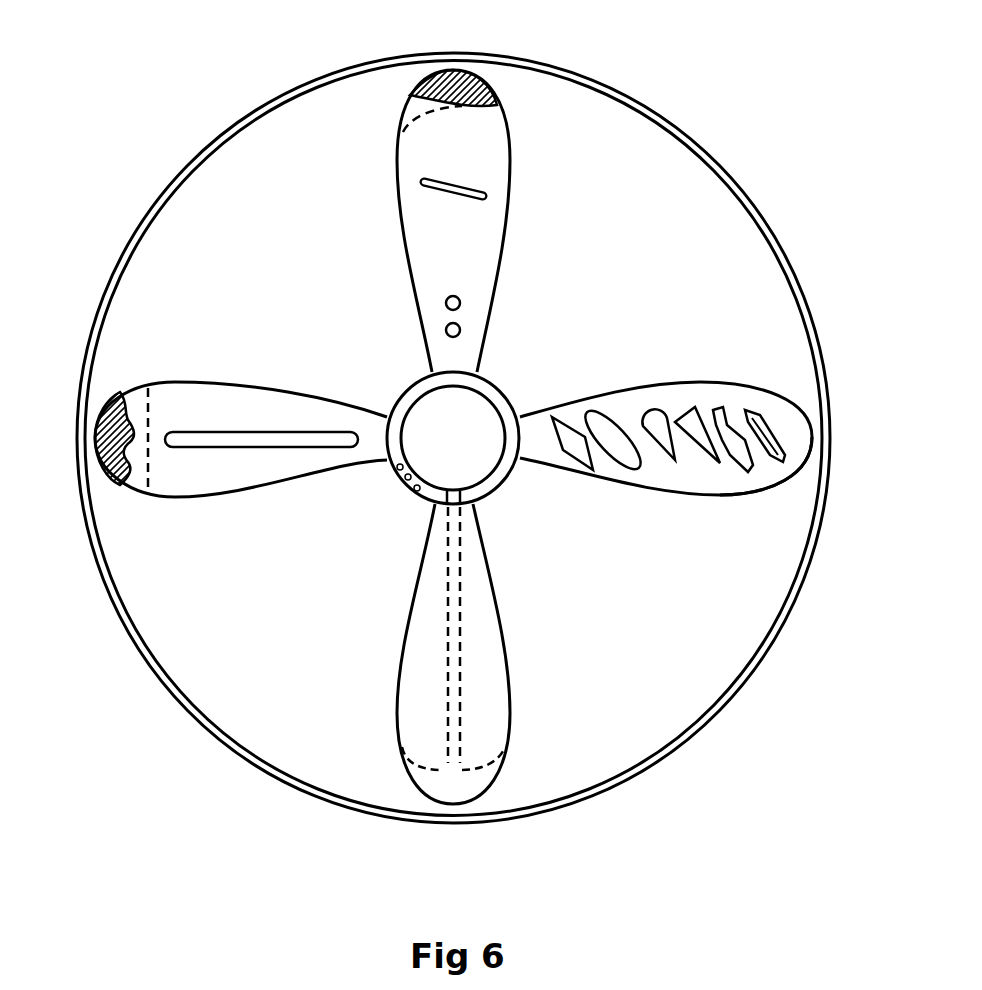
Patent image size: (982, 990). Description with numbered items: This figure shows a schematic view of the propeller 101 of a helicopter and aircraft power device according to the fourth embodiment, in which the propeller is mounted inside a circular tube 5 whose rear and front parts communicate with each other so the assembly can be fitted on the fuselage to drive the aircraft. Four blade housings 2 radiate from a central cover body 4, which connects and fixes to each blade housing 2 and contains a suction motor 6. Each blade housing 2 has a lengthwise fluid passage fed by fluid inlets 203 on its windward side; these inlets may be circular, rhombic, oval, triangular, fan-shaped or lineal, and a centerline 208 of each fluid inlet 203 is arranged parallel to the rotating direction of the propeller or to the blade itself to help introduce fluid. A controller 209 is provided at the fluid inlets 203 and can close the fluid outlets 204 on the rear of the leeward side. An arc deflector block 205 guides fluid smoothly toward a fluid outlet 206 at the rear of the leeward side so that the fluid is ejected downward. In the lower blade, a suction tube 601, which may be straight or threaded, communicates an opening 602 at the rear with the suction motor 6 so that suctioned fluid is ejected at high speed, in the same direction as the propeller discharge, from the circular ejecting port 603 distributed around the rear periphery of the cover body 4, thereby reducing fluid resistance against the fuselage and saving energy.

The circular tube 5 is at (785, 262).
The blade housing 2 is at (699, 381).
The fluid inlet 203 is at (474, 184).
The arc deflector block 205 is at (440, 86).
The fluid outlet 206 is at (420, 108).
The centerline 208 is at (753, 418).
The propeller 101 is at (788, 433).
The controller 209 is at (240, 438).
The fluid outlet 204 is at (130, 405).
The suction motor 6 is at (502, 391).
The cover body 4 is at (473, 389).
The circular ejecting port 603 is at (412, 489).
The suction tube 601 is at (453, 628).
The opening 602 is at (482, 790).